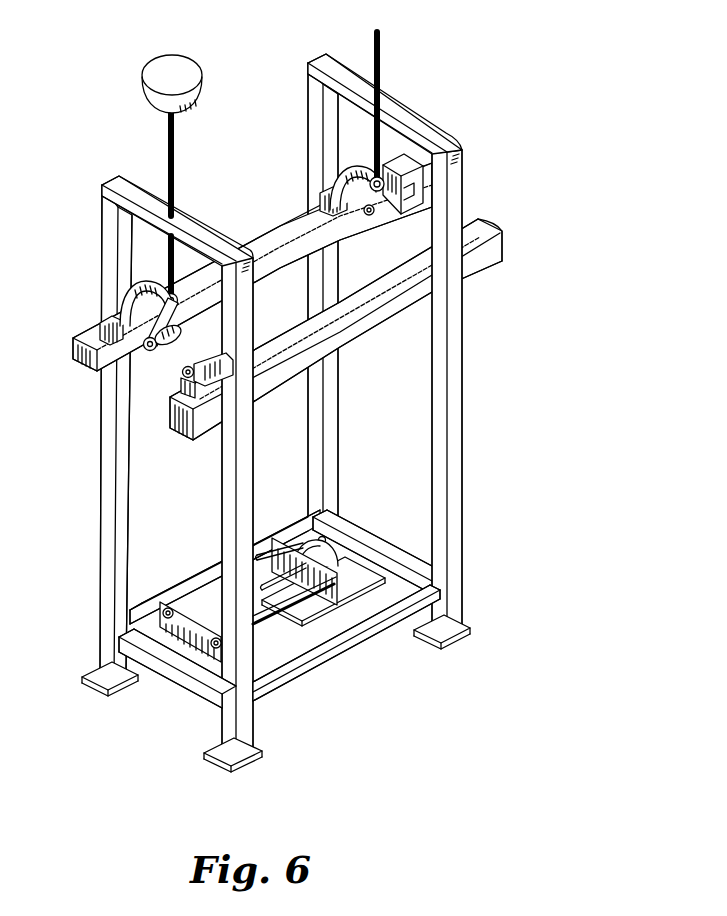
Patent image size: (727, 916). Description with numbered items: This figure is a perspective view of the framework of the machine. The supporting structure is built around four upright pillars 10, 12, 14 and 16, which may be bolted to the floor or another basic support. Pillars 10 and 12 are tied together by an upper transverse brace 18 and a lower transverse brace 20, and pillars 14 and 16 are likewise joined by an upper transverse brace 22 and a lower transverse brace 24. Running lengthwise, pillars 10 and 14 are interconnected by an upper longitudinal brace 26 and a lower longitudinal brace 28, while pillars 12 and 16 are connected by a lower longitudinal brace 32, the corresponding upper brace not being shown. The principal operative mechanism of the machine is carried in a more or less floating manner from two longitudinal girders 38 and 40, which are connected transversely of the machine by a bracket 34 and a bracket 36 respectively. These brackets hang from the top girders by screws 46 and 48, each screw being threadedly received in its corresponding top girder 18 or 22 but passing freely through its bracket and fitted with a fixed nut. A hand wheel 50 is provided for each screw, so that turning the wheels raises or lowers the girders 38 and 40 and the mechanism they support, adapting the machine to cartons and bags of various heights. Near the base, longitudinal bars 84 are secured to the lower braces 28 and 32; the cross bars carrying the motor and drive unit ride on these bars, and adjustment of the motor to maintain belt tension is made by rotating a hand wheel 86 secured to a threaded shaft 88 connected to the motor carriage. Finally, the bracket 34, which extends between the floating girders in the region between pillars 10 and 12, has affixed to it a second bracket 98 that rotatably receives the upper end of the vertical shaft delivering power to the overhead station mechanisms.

The upright pillar 10 is at (226, 502).
The upright pillar 12 is at (103, 254).
The upright pillar 14 is at (462, 382).
The upright pillar 16 is at (311, 152).
The upper transverse brace 18 is at (200, 238).
The lower transverse brace 20 is at (198, 684).
The upper transverse brace 22 is at (418, 128).
The lower transverse brace 24 is at (362, 531).
The upper longitudinal brace 26 is at (347, 338).
The lower longitudinal brace 28 is at (392, 620).
The lower longitudinal brace 32 is at (225, 567).
The bracket 34 is at (180, 345).
The bracket 36 is at (396, 183).
The longitudinal girder 38 is at (79, 371).
The longitudinal girder 40 is at (336, 342).
The screw 46 is at (174, 193).
The screw 48 is at (381, 82).
The hand wheel 50 is at (145, 93).
The longitudinal bar 84 is at (220, 594).
The hand wheel 86 is at (330, 566).
The threaded shaft 88 is at (275, 584).
The second bracket 98 is at (182, 386).